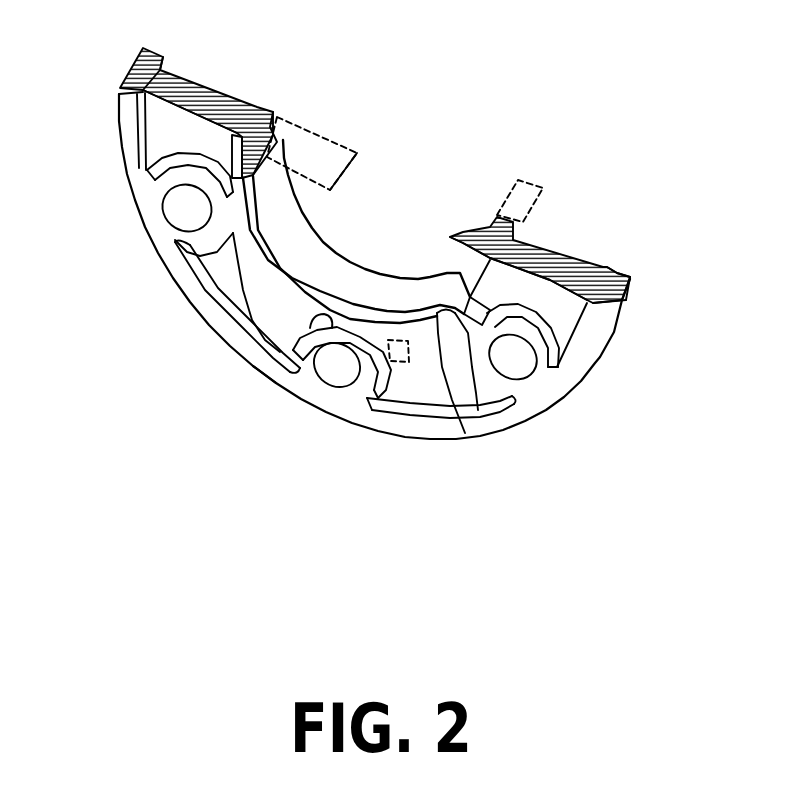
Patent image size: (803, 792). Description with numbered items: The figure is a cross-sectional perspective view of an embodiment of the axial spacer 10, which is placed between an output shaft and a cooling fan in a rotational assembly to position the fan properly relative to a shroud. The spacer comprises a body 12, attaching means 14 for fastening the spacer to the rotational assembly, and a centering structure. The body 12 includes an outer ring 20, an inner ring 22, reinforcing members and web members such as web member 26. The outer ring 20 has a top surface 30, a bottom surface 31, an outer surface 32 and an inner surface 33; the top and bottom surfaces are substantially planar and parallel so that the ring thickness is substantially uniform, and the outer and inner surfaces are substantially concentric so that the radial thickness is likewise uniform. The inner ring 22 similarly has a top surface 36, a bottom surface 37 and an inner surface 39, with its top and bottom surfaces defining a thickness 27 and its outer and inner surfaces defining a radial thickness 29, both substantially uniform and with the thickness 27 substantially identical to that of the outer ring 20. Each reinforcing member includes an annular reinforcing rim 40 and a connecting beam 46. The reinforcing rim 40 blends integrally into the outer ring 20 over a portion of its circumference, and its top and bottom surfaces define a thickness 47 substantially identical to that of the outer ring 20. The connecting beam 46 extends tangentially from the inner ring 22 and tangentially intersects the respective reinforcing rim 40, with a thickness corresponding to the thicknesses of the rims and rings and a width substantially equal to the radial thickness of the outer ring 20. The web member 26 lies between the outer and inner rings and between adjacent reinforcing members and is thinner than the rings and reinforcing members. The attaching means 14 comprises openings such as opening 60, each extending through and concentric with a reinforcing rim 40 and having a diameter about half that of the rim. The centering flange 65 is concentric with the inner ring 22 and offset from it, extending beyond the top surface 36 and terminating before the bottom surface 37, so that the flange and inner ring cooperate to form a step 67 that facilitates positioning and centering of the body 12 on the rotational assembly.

The axial spacer 10 is at (317, 438).
The body 12 is at (126, 62).
The means for attaching the spacer to a rotational assembly 14 is at (168, 211).
The outer ring 20 is at (630, 281).
The inner ring 22 is at (502, 220).
The web member 26 is at (533, 297).
The thickness 27 is at (340, 173).
The radial thickness 29 is at (527, 182).
The top surface 30 is at (580, 353).
The bottom surface 31 is at (613, 270).
The outer surface 32 is at (617, 305).
The inner surface 33 is at (143, 133).
The top surface 36 is at (465, 433).
The bottom surface 37 is at (263, 105).
The inner surface 39 is at (287, 133).
The annular reinforcing rim 40 is at (192, 163).
The connecting beam 46 is at (228, 350).
The thickness 47 is at (406, 350).
The opening 60 is at (520, 367).
The centering flange 65 is at (270, 377).
The step 67 is at (405, 262).